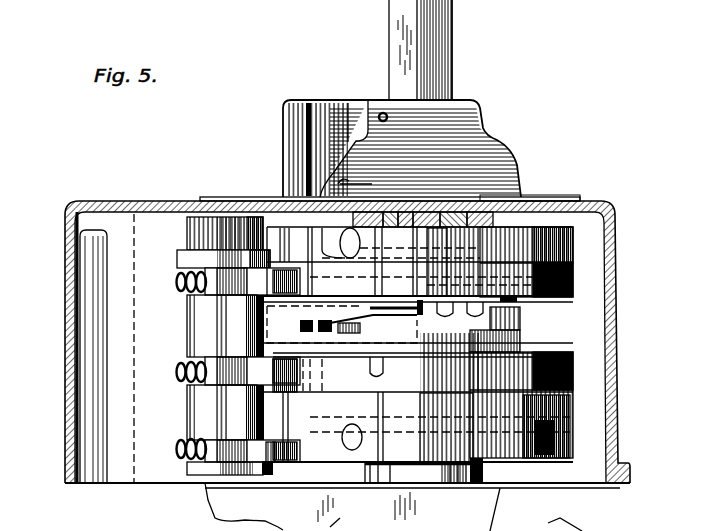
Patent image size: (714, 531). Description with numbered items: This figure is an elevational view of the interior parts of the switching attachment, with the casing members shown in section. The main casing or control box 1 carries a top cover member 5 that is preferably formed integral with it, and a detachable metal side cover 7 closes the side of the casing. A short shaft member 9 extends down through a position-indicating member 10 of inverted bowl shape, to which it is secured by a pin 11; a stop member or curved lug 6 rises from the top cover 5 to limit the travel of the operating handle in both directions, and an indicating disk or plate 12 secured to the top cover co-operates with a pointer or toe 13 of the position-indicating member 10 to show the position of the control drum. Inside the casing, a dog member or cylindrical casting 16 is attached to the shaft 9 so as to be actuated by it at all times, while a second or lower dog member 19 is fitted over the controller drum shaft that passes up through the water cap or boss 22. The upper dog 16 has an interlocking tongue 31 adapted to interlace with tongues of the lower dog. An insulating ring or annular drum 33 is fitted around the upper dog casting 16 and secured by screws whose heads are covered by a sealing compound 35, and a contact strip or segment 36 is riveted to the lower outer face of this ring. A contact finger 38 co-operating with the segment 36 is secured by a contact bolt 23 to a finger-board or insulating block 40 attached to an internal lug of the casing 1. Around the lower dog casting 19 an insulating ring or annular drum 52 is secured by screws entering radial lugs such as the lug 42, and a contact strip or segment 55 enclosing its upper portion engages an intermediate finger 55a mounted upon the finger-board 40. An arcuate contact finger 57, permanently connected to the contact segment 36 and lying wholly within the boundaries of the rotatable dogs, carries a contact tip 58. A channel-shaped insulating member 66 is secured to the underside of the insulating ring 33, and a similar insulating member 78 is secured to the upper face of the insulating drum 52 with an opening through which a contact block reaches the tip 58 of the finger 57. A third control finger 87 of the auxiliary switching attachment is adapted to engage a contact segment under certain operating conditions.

The main casing or control box 1 is at (616, 337).
The top cover member 5 is at (191, 200).
The stop member or curved lug 6 is at (283, 133).
The detachable metal side cover 7 is at (65, 390).
The short shaft member 9 is at (389, 43).
The position-indicating member 10 is at (520, 163).
The pin 11 is at (380, 113).
The indicating disk or plate 12 is at (552, 198).
The pointer or toe 13 is at (367, 184).
The dog member or cylindrical casting 16 is at (542, 236).
The second or lower dog member 19 is at (521, 341).
The water cap or boss 22 is at (483, 473).
The contact bolt 23 is at (186, 438).
The interlocking tongue or curved block 31 is at (521, 320).
The ring or annular drum of insulating material 33 is at (558, 257).
The sealing compound 35 is at (550, 247).
The contact strip or segment 36 is at (560, 297).
The contact finger 38 is at (256, 305).
The finger-board or insulating block 40 is at (178, 345).
The radially extending arm or lug 42 is at (417, 507).
The insulating ring or annular drum structure 52 is at (565, 419).
The contact strip or segment 55 is at (567, 373).
The intermediate finger 55a is at (250, 433).
The contact finger 57 is at (400, 307).
The contact tip 58 is at (342, 324).
The insulating member 66 is at (257, 336).
The insulating member 78 is at (397, 346).
The third control finger 87 is at (271, 453).